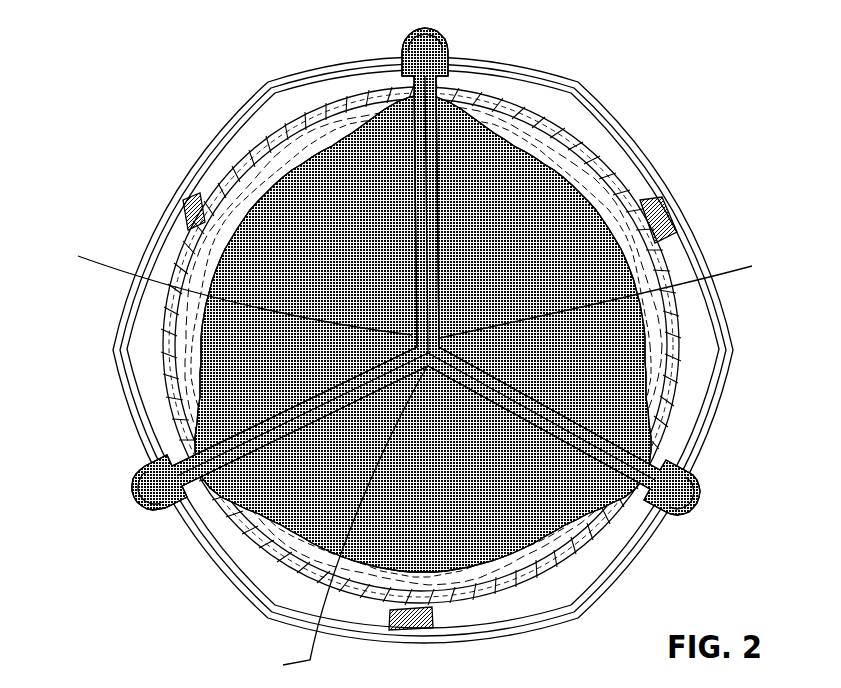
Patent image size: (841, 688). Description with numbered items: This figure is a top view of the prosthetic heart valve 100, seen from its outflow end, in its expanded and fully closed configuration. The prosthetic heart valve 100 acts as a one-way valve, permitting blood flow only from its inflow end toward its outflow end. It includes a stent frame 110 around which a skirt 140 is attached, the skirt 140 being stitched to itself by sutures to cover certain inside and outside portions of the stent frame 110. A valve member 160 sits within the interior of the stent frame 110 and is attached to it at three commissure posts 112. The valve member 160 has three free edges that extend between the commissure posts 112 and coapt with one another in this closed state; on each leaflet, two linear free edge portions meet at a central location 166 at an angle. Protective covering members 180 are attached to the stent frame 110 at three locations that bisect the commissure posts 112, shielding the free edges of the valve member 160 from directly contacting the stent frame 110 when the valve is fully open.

The prosthetic heart valve 100 is at (154, 74).
The stent frame 110 is at (638, 130).
The commissure posts 112 is at (442, 33).
The skirt 140 is at (157, 370).
The valve member 160 is at (332, 252).
The central location 166 is at (417, 467).
The protective covering members 180 is at (642, 190).